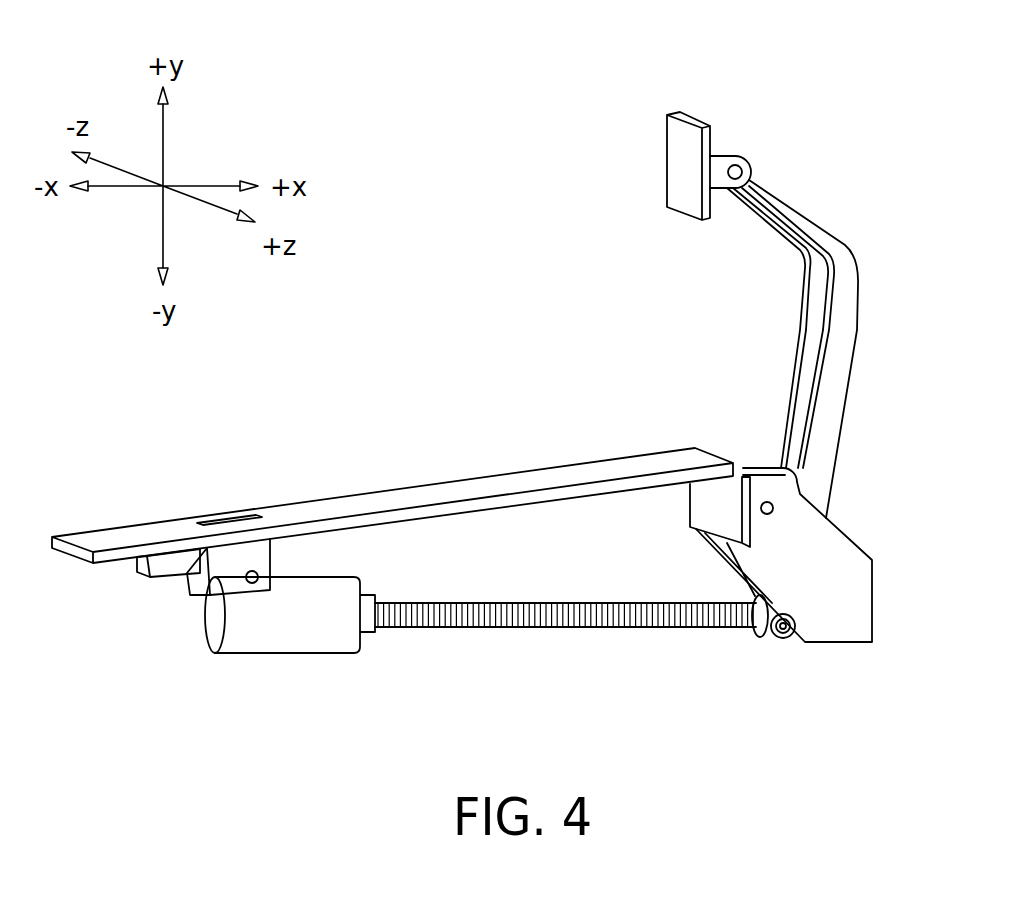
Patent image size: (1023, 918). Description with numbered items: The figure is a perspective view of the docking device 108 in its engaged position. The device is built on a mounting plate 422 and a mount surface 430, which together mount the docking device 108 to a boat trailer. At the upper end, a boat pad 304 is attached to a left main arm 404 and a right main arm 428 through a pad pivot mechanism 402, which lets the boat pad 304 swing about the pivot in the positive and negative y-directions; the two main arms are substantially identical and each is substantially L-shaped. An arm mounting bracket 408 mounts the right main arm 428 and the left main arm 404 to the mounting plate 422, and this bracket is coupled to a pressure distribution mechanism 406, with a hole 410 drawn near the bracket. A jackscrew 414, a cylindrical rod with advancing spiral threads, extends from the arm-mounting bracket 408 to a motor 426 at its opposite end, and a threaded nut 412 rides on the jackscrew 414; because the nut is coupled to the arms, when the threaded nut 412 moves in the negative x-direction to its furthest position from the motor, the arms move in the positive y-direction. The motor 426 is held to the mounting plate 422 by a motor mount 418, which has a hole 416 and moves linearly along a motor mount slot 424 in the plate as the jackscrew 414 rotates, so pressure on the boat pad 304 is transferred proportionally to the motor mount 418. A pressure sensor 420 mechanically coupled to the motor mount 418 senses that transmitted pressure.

The docking device 108 is at (878, 178).
The boat pad 304 is at (680, 165).
The pad pivot mechanism 402 is at (750, 172).
The left main arm 404 is at (843, 317).
The pressure distribution mechanism 406 is at (847, 537).
The arm mounting bracket 408 is at (858, 594).
The pivot hole 410 is at (774, 507).
The threaded nut 412 is at (770, 637).
The jackscrew 414 is at (567, 627).
The hole 416 is at (254, 584).
The motor mount 418 is at (200, 580).
The pressure sensor 420 is at (163, 565).
The mounting plate 422 is at (107, 537).
The motor mount slot 424 is at (228, 518).
The motor 426 is at (323, 620).
The right main arm 428 is at (803, 317).
The mount surface 430 is at (713, 505).